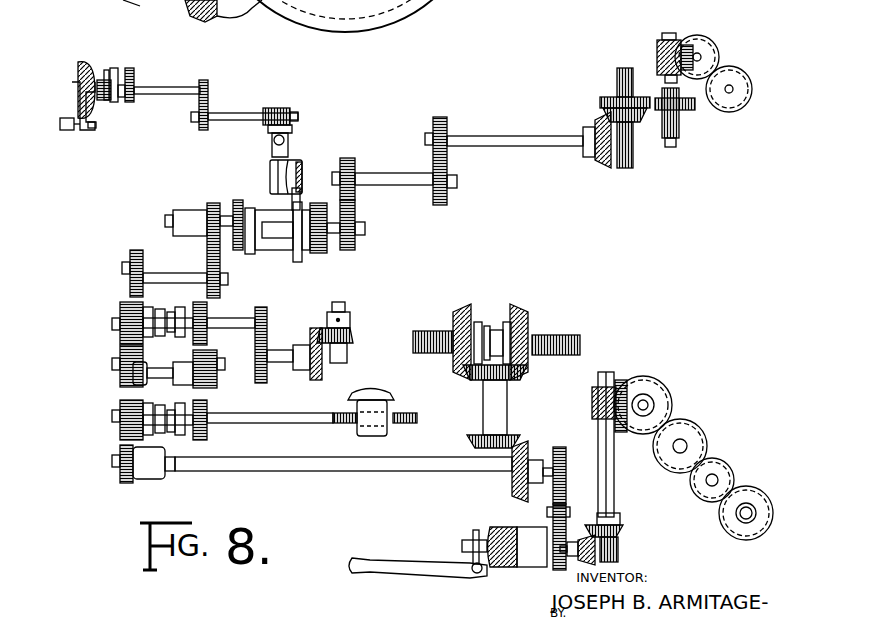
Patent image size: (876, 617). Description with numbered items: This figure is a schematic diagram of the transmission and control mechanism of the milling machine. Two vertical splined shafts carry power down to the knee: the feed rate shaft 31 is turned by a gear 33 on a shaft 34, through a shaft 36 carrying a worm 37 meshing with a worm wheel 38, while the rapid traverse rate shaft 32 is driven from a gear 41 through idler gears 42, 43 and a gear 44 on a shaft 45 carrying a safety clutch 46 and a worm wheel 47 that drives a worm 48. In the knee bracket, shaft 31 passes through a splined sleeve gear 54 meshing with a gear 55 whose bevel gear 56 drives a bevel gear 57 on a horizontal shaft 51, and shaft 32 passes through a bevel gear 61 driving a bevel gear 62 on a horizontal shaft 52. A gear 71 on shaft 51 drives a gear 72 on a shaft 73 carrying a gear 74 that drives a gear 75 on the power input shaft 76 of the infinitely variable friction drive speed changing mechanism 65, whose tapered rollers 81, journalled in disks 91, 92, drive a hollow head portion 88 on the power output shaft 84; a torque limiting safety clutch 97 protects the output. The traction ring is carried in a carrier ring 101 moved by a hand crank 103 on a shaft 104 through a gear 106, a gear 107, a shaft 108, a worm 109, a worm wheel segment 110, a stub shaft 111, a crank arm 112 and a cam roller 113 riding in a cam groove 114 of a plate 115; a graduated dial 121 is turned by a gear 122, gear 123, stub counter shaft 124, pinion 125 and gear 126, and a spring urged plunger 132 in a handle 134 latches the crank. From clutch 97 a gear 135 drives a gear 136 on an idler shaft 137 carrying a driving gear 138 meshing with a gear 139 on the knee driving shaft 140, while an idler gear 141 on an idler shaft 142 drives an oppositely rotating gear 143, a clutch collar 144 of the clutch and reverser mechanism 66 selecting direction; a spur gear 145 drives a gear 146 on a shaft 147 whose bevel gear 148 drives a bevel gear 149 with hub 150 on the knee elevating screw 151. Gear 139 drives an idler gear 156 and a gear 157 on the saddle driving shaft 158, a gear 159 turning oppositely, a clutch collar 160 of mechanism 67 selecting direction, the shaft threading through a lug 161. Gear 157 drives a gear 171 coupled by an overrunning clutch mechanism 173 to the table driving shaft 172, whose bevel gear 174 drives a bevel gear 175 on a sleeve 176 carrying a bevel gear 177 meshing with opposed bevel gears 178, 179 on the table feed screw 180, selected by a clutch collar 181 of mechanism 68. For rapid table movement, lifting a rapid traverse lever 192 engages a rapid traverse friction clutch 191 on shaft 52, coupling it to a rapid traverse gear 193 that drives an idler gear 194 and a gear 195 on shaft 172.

The feed rate shaft 31 is at (680, 142).
The rapid traverse rate shaft 32 is at (620, 160).
The gear 33 is at (742, 71).
The shaft 34 is at (733, 92).
The shaft 36 is at (700, 55).
The worm 37 is at (687, 57).
The worm wheel 38 is at (657, 48).
The gear 41 is at (760, 492).
The idler gear 42 is at (728, 470).
The idler gear 43 is at (705, 440).
The gear 44 is at (668, 385).
The shaft 45 is at (650, 405).
The safety clutch 46 is at (648, 395).
The worm wheel 47 is at (623, 380).
The worm 48 is at (595, 395).
The shaft 51 is at (510, 136).
The shaft 52 is at (462, 546).
The splined sleeve gear 54 is at (690, 110).
The gear 55 is at (603, 98).
The bevel gear 56 is at (635, 160).
The bevel gear 57 is at (595, 150).
The bevel gear 61 is at (622, 527).
The bevel gear 62 is at (600, 560).
The infinitely variable friction drive speed changing mechanism 65 is at (278, 250).
The clutch and reverser mechanism 66 is at (152, 350).
The clutch and reverser mechanism 67 is at (157, 392).
The clutch and reverser mechanism 68 is at (493, 320).
The gear 71 is at (440, 117).
The gear 72 is at (448, 205).
The shaft 73 is at (395, 173).
The gear 74 is at (346, 158).
The gear 75 is at (345, 222).
The power input shaft 76 is at (365, 228).
The tapered rollers 81 is at (258, 244).
The power output shaft 84 is at (233, 206).
The hollow head portion 88 is at (276, 240).
The disk 91 is at (318, 203).
The disk 92 is at (203, 223).
The torque limiting safety clutch 97 is at (165, 221).
The carrier ring 101 is at (262, 205).
The hand crank 103 is at (72, 96).
The shaft 104 is at (165, 87).
The gear 106 is at (202, 80).
The gear 107 is at (200, 128).
The shaft 108 is at (218, 113).
The worm 109 is at (272, 108).
The worm wheel segment 110 is at (262, 113).
The stub shaft 111 is at (292, 128).
The crank arm 112 is at (289, 140).
The cam roller 113 is at (270, 166).
The cam groove 114 is at (270, 176).
The plate 115 is at (297, 188).
The graduated dial 121 is at (76, 76).
The gear 122 is at (125, 96).
The gear 123 is at (130, 68).
The stub counter shaft 124 is at (114, 68).
The pinion 125 is at (107, 70).
The gear 126 is at (106, 100).
The spring urged plunger 132 is at (92, 126).
The handle 134 is at (64, 130).
The gear 135 is at (156, 210).
The gear 136 is at (207, 290).
The idler shaft 137 is at (186, 275).
The driving gear 138 is at (128, 265).
The gear 139 is at (118, 312).
The knee driving shaft 140 is at (268, 345).
The idler gear 141 is at (200, 392).
The idler shaft 142 is at (118, 360).
The gear 143 is at (207, 308).
The clutch collar 144 is at (150, 326).
The spur gear 145 is at (258, 325).
The gear 146 is at (272, 383).
The shaft 147 is at (268, 353).
The bevel gear 148 is at (332, 363).
The bevel gear 149 is at (352, 330).
The hub or sleeve 150 is at (346, 310).
The knee elevating screw 151 is at (335, 312).
The idler gear 156 is at (193, 370).
The gear 157 is at (118, 414).
The saddle driving shaft 158 is at (278, 420).
The gear 159 is at (207, 430).
The clutch collar 160 is at (175, 435).
The lug 161 is at (372, 398).
The gear 171 is at (120, 470).
The table driving shaft 172 is at (330, 471).
The overrunning clutch mechanism 173 is at (158, 478).
The bevel gear 174 is at (522, 445).
The bevel gear 175 is at (470, 442).
The sleeve 176 is at (483, 410).
The bevel gear 177 is at (465, 378).
The bevel gear 178 is at (460, 304).
The bevel gear 179 is at (520, 305).
The table feed screw 180 is at (556, 335).
The clutch collar 181 is at (506, 322).
The rapid traverse friction clutch 191 is at (530, 567).
The rapid traverse lever 192 is at (400, 572).
The rapid traverse gear 193 is at (553, 530).
The idler gear 194 is at (600, 500).
The gear 195 is at (553, 482).